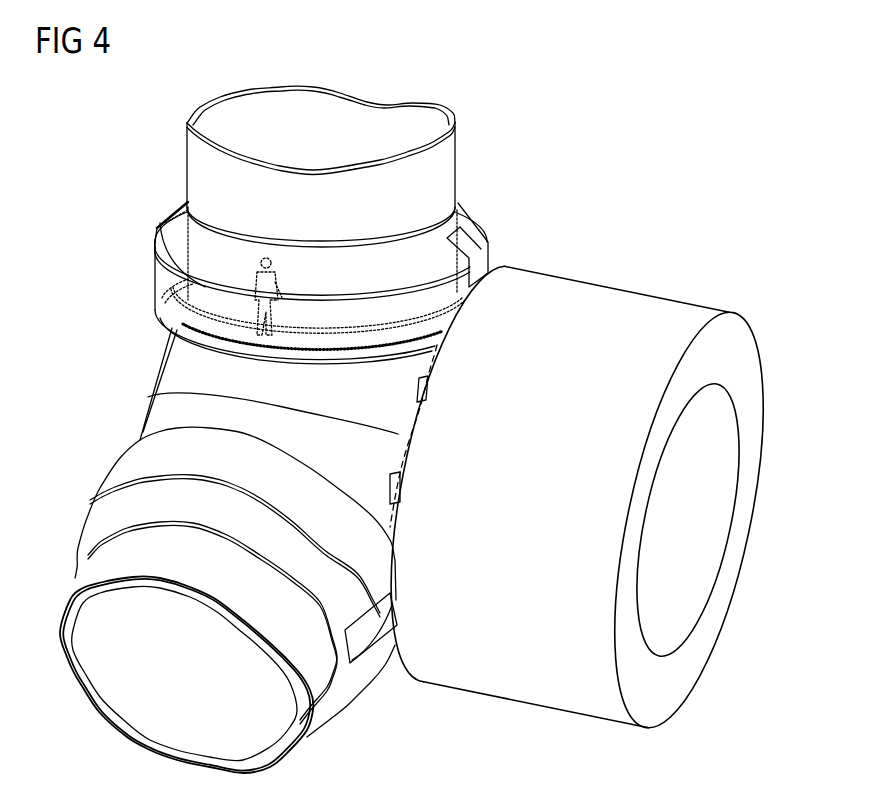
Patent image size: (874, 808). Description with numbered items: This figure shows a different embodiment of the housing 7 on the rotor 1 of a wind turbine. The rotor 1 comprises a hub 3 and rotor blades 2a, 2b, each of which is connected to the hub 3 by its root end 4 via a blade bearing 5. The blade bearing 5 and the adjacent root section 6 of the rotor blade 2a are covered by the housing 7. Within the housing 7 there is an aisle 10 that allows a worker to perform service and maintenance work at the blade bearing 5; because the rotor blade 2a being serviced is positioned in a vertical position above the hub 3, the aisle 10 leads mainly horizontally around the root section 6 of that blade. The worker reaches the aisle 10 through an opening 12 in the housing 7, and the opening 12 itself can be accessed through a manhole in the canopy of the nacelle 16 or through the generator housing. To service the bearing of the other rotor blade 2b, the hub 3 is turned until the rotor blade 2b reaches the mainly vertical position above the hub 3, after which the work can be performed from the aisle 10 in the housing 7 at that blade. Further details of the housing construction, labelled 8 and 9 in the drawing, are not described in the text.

The rotor 1 is at (84, 175).
The rotor blade 2a is at (187, 142).
The rotor blade 2b is at (73, 608).
The hub 3 is at (145, 392).
The root end 4 is at (185, 318).
The blade bearing 5 is at (172, 288).
The root section 6 is at (160, 223).
The housing 7 is at (97, 242).
The flange ring 8 is at (155, 270).
The tab 9 is at (186, 203).
The aisle 10 is at (315, 357).
The opening 12 is at (472, 247).
The nacelle 16 is at (541, 272).